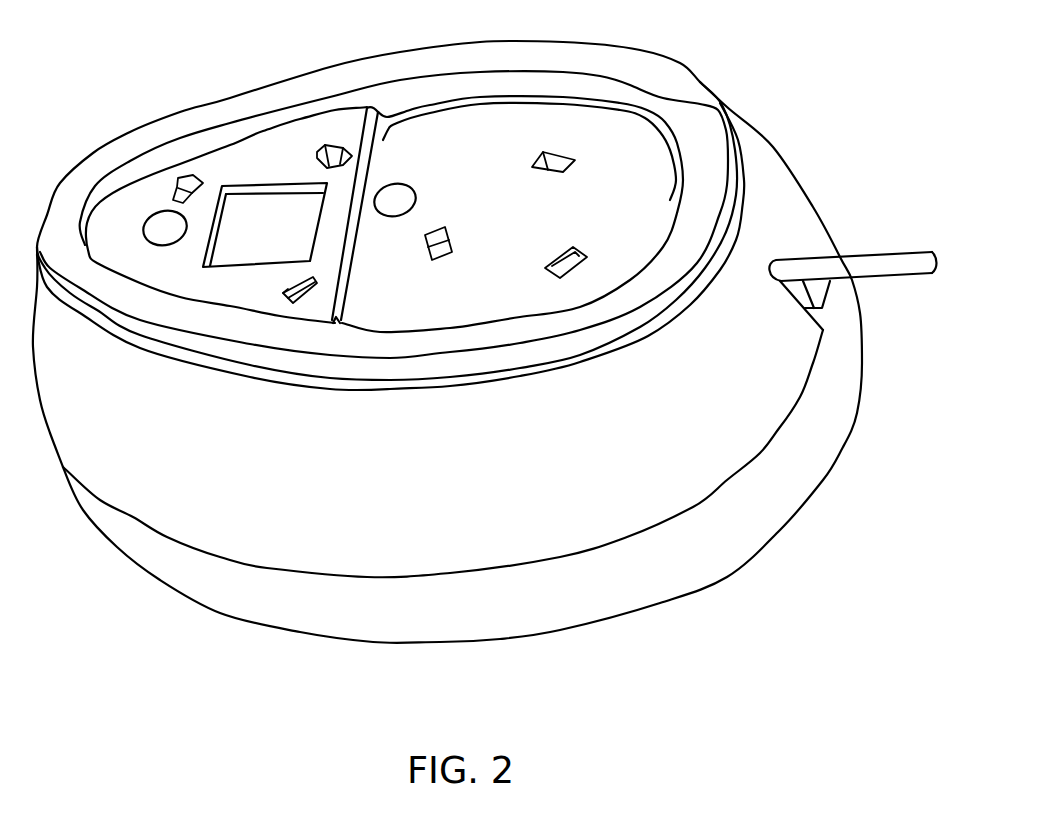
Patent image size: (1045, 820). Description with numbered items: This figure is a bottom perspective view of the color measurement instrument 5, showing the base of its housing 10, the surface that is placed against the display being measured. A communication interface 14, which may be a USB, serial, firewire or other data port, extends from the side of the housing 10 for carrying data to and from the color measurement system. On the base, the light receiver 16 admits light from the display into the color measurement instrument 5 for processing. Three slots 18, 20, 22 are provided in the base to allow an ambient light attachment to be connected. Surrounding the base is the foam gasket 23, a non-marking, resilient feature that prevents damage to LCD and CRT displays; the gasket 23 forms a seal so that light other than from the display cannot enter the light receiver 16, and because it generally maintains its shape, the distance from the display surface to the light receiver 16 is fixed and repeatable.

The color measurement instrument 5 is at (288, 663).
The housing 10 is at (777, 529).
The communication interface 14 is at (885, 258).
The light receiver 16 is at (248, 187).
The slot 18 is at (185, 177).
The slot 20 is at (331, 144).
The slot 22 is at (283, 293).
The foam gasket 23 is at (553, 55).